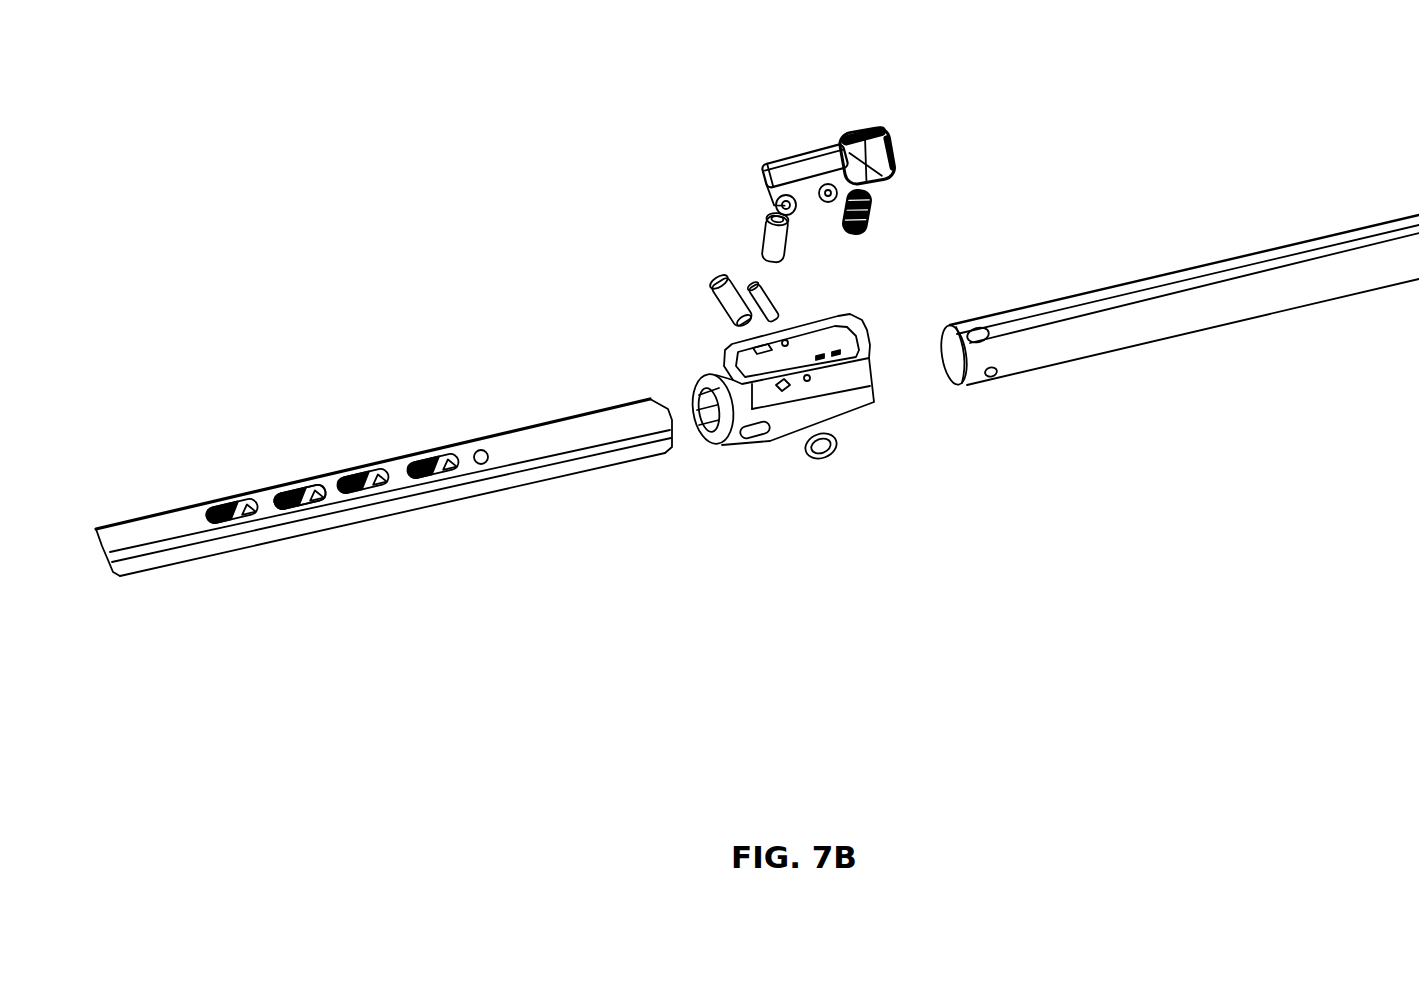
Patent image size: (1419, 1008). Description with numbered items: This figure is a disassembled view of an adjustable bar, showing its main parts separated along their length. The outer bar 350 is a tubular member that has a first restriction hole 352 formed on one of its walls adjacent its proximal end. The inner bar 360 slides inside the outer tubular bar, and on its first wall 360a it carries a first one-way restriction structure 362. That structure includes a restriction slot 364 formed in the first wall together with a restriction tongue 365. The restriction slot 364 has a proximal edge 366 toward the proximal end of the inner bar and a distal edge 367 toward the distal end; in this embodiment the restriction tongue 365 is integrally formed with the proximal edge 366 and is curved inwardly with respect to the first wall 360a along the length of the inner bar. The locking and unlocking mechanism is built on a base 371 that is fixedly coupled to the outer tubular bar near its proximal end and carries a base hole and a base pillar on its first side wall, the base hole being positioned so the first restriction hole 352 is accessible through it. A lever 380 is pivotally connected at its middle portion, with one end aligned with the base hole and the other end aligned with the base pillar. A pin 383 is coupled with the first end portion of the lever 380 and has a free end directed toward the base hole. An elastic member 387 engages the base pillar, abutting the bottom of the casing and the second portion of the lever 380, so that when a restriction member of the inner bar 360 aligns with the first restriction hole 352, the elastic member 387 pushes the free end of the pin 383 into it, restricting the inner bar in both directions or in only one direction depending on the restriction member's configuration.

The outer bar 350 is at (1178, 284).
The first restriction hole 352 is at (990, 336).
The inner bar 360 is at (379, 496).
The first wall 360a is at (595, 425).
The first one-way restriction structure 362 is at (393, 460).
The restriction slot 364 is at (296, 500).
The restriction tongue 365 is at (312, 500).
The proximal edge 366 is at (323, 492).
The distal edge 367 is at (290, 502).
The base 371 is at (863, 413).
The lever 380 is at (822, 162).
The pin 383 is at (772, 250).
The elastic member 387 is at (872, 213).